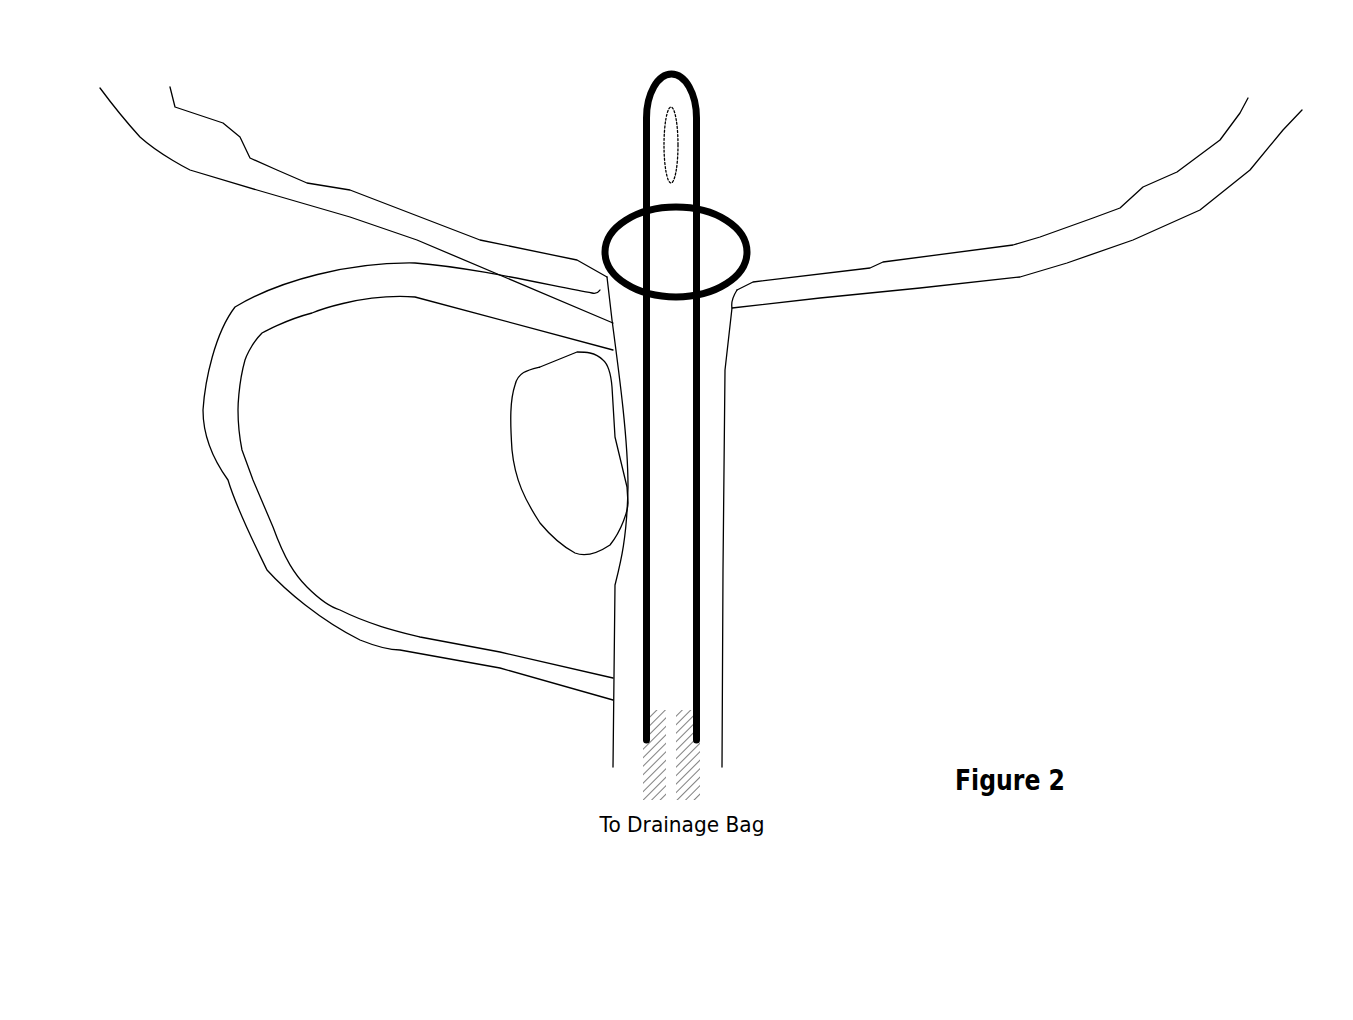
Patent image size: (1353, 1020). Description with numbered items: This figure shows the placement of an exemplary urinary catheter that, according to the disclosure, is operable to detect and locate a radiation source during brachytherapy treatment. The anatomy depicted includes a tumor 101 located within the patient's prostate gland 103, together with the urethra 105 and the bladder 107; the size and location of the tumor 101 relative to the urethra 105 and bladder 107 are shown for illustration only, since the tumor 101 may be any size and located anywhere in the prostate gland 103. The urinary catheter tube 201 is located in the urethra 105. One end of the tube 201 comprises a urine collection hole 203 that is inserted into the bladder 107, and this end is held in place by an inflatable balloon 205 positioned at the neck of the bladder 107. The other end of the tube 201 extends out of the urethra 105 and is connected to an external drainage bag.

The tumor 101 is at (569, 453).
The prostate gland 103 is at (408, 481).
The urethra 105 is at (705, 637).
The bladder 107 is at (701, 205).
The urinary catheter tube 201 is at (665, 490).
The urine collection hole 203 is at (670, 152).
The inflatable balloon 205 is at (602, 270).